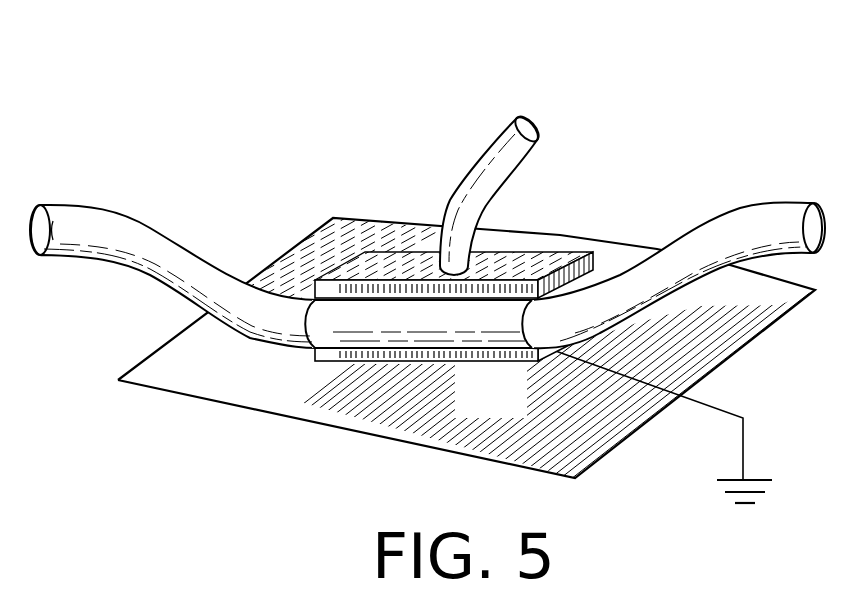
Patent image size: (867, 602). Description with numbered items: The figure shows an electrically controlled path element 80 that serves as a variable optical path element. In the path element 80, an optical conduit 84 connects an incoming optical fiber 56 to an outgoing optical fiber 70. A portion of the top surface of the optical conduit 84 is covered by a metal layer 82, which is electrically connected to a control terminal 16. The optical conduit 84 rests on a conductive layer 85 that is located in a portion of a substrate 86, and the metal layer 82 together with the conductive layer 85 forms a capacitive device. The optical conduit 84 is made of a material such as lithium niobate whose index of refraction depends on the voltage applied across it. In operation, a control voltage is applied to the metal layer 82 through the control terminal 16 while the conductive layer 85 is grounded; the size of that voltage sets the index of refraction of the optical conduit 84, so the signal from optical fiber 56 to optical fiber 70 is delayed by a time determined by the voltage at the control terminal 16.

The electrically controlled path element 80 is at (235, 84).
The control terminal 16 is at (488, 157).
The incoming optical fiber 56 is at (105, 217).
The outgoing optical fiber 70 is at (760, 213).
The metal layer 82 is at (562, 270).
The optical conduit 84 is at (375, 326).
The conductive layer 85 is at (391, 362).
The substrate 86 is at (510, 406).